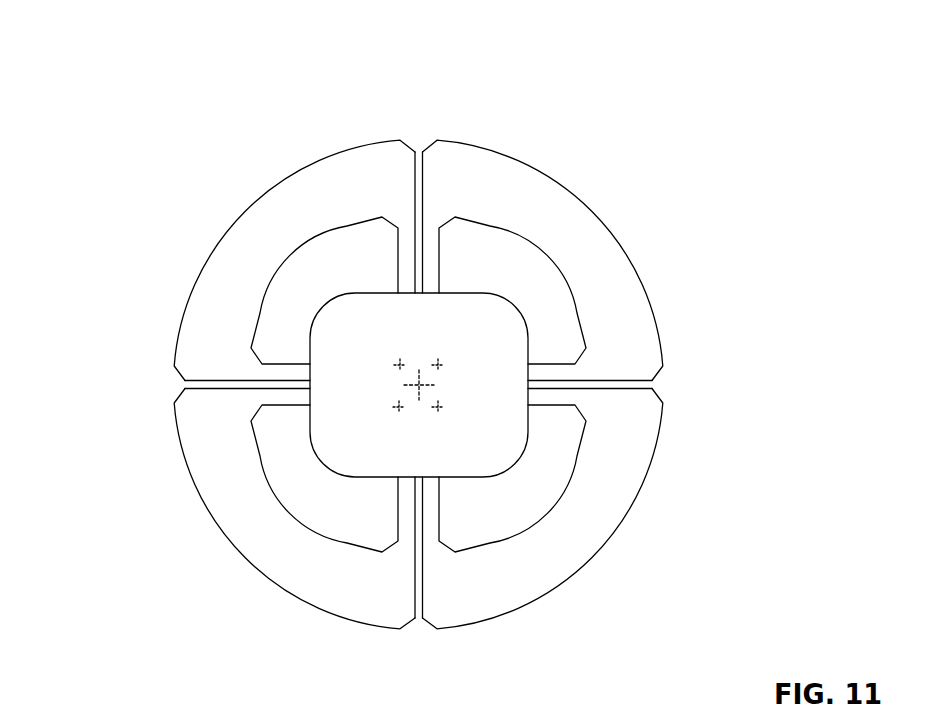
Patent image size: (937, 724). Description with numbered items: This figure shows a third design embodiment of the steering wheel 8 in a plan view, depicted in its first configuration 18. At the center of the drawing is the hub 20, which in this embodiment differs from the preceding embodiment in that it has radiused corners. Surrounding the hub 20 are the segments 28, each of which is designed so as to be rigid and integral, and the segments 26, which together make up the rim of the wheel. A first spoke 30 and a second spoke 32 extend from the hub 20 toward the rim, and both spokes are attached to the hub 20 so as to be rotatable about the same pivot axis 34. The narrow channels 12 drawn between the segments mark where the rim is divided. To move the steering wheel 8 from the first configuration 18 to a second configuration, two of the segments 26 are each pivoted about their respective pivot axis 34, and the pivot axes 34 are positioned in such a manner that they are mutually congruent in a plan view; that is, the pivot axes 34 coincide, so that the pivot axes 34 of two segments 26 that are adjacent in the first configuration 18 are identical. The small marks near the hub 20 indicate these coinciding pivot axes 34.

The steering wheel 8 is at (733, 118).
The channels 12 is at (419, 384).
The first configuration 18 is at (85, 197).
The hub 20 is at (505, 440).
The segments 26 is at (244, 230).
The segments 28 is at (203, 298).
The first spoke 30 is at (398, 263).
The second spoke 32 is at (439, 263).
The pivot axis 34 is at (397, 364).